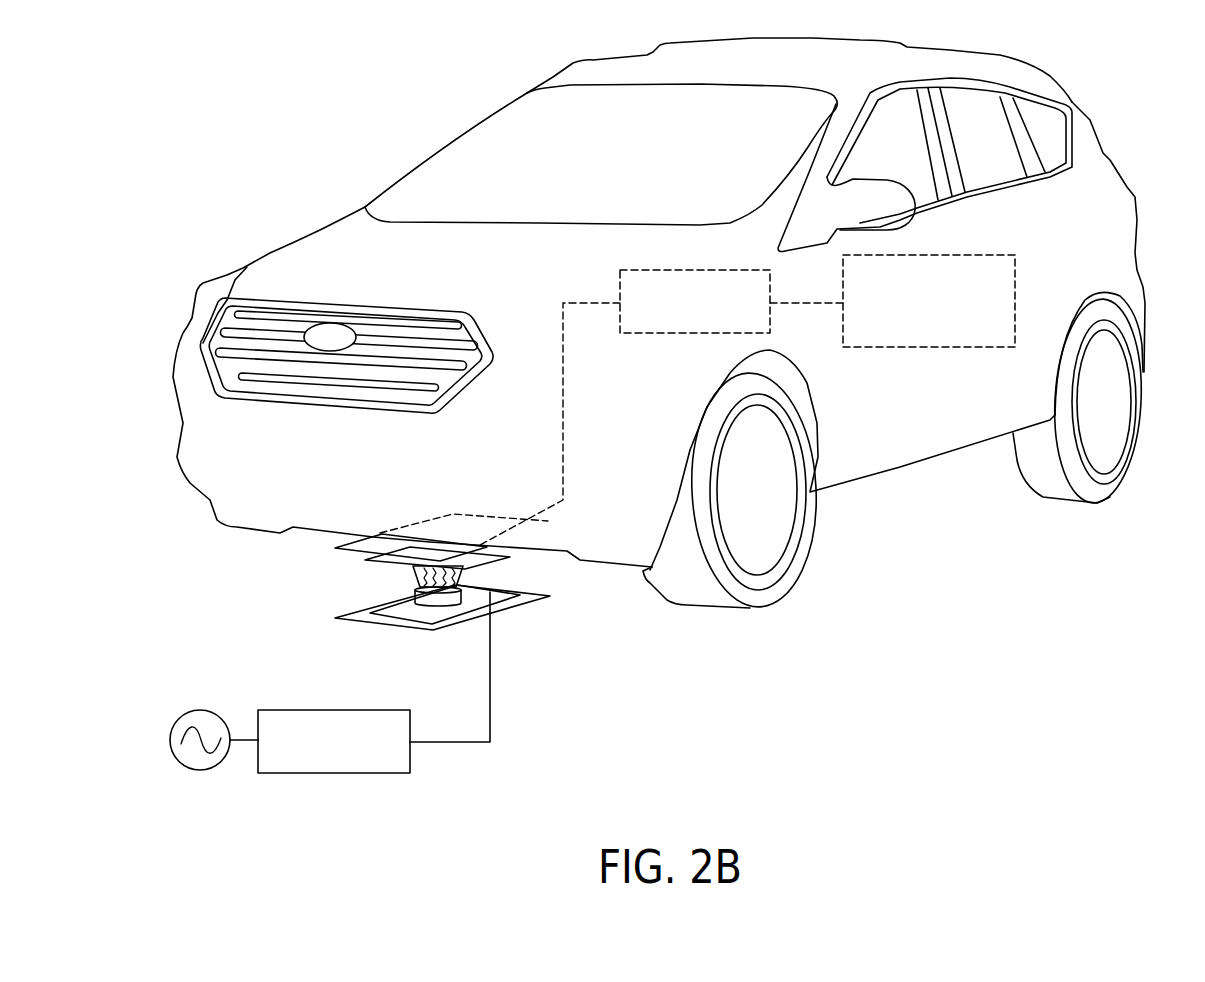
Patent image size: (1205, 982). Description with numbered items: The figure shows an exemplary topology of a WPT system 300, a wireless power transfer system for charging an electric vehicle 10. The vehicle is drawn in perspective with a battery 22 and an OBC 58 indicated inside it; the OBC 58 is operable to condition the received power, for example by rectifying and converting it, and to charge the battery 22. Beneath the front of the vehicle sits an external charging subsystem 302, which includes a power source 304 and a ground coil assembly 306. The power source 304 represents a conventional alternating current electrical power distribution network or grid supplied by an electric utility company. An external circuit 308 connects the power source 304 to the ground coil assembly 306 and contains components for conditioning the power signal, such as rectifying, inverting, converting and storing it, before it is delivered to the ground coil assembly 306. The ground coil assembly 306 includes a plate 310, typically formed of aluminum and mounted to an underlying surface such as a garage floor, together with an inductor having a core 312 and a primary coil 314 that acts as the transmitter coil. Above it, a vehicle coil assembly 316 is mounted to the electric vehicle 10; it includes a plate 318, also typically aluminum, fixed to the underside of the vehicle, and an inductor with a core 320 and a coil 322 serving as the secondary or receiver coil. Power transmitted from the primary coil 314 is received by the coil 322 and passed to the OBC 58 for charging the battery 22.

The electric vehicle 10 is at (1125, 152).
The battery 22 is at (1017, 278).
The OBC 58 is at (676, 315).
The WPT system 300 is at (650, 690).
The external charging subsystem 302 is at (192, 650).
The power source 304 is at (200, 770).
The ground coil assembly 306 is at (545, 624).
The external circuit 308 is at (327, 757).
The plate 310 is at (380, 626).
The core 312 is at (417, 619).
The primary coil 314 is at (470, 598).
The vehicle coil assembly 316 is at (598, 572).
The plate 318 is at (335, 549).
The core 320 is at (413, 567).
The coil 322 is at (463, 562).